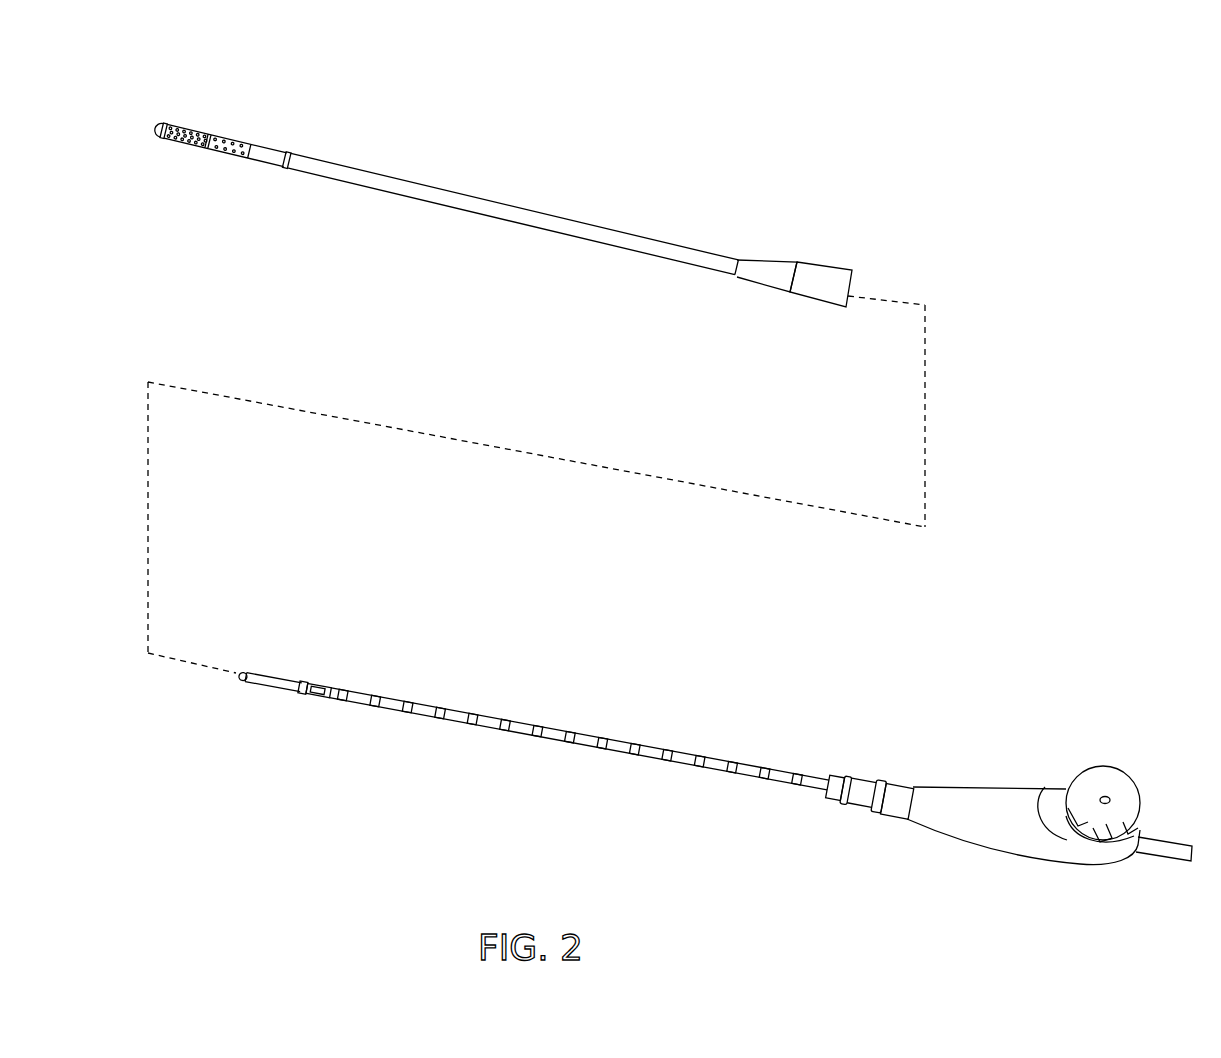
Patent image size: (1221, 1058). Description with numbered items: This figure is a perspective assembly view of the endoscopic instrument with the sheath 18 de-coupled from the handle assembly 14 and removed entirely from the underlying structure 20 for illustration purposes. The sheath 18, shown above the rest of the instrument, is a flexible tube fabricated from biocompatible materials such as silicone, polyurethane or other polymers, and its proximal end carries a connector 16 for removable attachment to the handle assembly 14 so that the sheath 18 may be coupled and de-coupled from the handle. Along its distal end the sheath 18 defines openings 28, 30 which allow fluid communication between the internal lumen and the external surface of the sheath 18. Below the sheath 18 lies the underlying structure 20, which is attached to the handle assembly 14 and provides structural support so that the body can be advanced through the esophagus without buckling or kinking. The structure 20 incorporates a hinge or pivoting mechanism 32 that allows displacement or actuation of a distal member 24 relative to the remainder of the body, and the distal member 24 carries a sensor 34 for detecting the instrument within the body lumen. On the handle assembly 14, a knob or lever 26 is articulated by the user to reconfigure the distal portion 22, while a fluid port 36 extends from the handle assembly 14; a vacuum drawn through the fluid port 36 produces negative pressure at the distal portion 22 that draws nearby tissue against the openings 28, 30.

The handle assembly 14 is at (1004, 858).
The connector 16 is at (818, 270).
The sheath 18 is at (567, 215).
The underlying structure 20 is at (568, 745).
The distal portion 22 is at (278, 671).
The distal member 24 is at (276, 690).
The knob or lever 26 is at (1095, 778).
The opening 28 is at (195, 112).
The opening 30 is at (238, 132).
The hinge or pivoting mechanism 32 is at (318, 702).
The sensor 34 is at (247, 683).
The fluid port 36 is at (1160, 855).